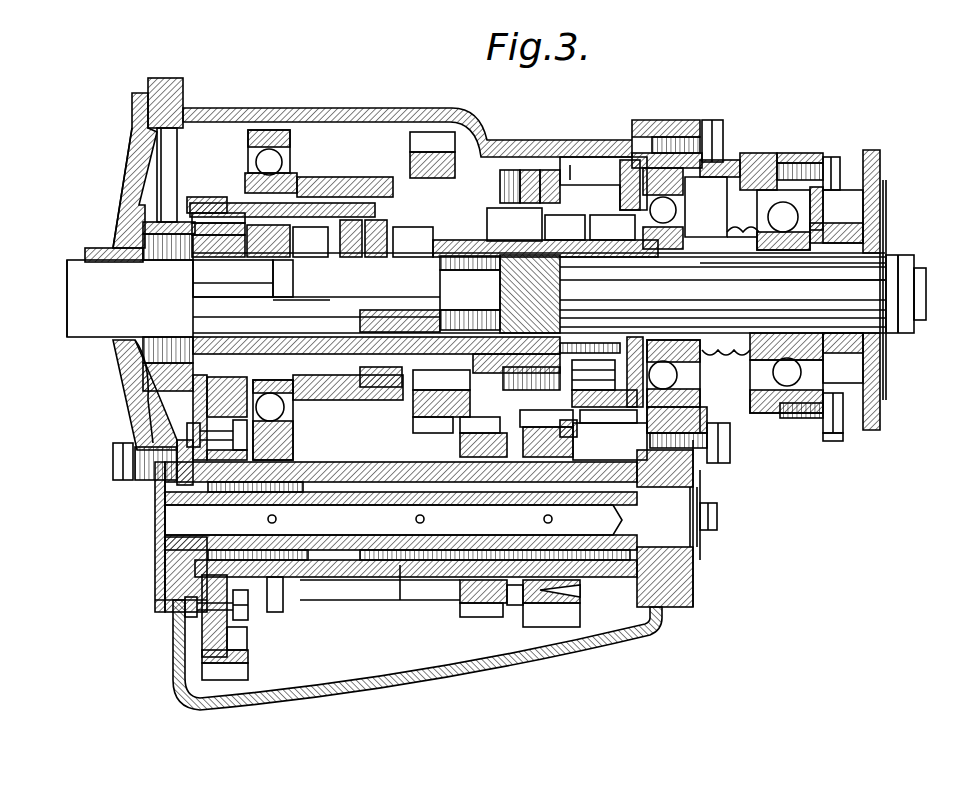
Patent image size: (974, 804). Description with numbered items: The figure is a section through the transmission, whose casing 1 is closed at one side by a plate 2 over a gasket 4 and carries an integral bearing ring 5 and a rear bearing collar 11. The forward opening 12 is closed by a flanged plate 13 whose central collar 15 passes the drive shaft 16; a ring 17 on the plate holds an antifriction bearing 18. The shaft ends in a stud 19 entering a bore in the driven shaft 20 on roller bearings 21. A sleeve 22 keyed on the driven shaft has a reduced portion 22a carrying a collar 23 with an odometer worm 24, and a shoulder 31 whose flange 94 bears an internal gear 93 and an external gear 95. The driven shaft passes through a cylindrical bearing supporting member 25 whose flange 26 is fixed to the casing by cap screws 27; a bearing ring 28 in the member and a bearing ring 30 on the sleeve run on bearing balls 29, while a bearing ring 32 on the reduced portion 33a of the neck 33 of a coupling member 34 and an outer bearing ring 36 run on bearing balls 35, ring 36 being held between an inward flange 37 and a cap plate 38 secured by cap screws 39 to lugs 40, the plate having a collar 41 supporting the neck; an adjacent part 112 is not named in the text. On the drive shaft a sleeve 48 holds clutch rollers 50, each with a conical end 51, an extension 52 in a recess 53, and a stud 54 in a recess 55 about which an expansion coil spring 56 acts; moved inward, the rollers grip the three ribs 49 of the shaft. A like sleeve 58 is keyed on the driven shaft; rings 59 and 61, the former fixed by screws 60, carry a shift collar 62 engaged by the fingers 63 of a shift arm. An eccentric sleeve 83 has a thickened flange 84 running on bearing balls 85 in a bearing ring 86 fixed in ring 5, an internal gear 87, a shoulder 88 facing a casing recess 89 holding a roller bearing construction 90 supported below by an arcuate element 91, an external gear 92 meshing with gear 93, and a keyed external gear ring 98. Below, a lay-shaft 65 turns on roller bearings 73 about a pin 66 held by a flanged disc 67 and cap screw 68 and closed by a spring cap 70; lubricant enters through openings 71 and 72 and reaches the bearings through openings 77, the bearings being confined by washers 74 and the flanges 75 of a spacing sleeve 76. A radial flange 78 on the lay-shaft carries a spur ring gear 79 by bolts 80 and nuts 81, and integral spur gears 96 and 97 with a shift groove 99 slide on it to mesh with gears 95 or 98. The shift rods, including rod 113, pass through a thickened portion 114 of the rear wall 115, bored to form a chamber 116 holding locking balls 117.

The casing 1 is at (372, 116).
The plate 2 is at (642, 637).
The gasket 4 is at (690, 587).
The bearing ring 5 is at (295, 415).
The bearing collar 11 is at (120, 450).
The opening 12 is at (165, 168).
The flanged plate 13 is at (132, 152).
The central collar 15 is at (110, 345).
The drive shaft 16 is at (78, 335).
The ring 17 is at (135, 395).
The antifriction bearing 18 is at (170, 337).
The stud 19 is at (440, 294).
The driven shaft 20 is at (886, 258).
The roller bearings 21 is at (488, 258).
The sleeve 22 is at (682, 258).
The reduced portion of sleeve 22a is at (742, 230).
The collar 23 is at (706, 352).
The worm 24 is at (738, 230).
The cylindrical bearing supporting member 25 is at (740, 415).
The outer peripheral flange 26 is at (690, 125).
The cap screws 27 is at (712, 120).
The bearing ring 28 is at (635, 408).
The bearing balls 29 is at (685, 210).
The bearing ring 30 is at (681, 232).
The shoulder 31 is at (676, 178).
The bearing ring 32 is at (680, 380).
The neck 33 is at (882, 240).
The inner reduced portion of neck 33a is at (812, 250).
The coupling member 34 is at (900, 340).
The bearing balls 35 is at (783, 200).
The outer bearing ring 36 is at (758, 155).
The inwardly projecting flange 37 is at (692, 392).
The cap plate 38 is at (828, 440).
The cap screws 39 is at (833, 155).
The lugs 40 is at (732, 445).
The outwardly extending collar 41 is at (836, 216).
The sleeve 48 is at (290, 380).
The ribs 49 is at (390, 262).
The clutch rollers 50 is at (305, 230).
The tapered end of clutch roller 51 is at (345, 218).
The extension 52 is at (376, 218).
The recess 53 is at (342, 255).
The stud 54 is at (310, 242).
The recess 55 is at (301, 290).
The expansion coil spring 56 is at (283, 257).
The sleeve 58 is at (455, 245).
The ring 59 is at (392, 235).
The screws 60 is at (286, 408).
The ring 61 is at (240, 200).
The shift collar 62 is at (400, 395).
The fingers 63 is at (372, 195).
The lay-shaft 65 is at (392, 583).
The pin 66 is at (700, 550).
The flanged disc 67 is at (702, 535).
The cap screw 68 is at (717, 515).
The spring cap 70 is at (155, 520).
The radial opening 71 is at (160, 505).
The opening 72 is at (155, 490).
The roller bearings 73 is at (320, 568).
The washers 74 is at (153, 568).
The flanges 75 is at (380, 580).
The spacing sleeve 76 is at (440, 590).
The openings 77 is at (278, 519).
The radial flange 78 is at (247, 632).
The spur ring gear 79 is at (248, 656).
The bolts 80 is at (250, 615).
The nuts 81 is at (153, 592).
The sleeve 83 is at (514, 224).
The thickened flange 84 is at (250, 180).
The bearing balls 85 is at (270, 160).
The bearing ring 86 is at (278, 108).
The internal gear 87 is at (245, 190).
The shoulder 88 is at (505, 165).
The recess 89 is at (523, 168).
The roller bearing construction 90 is at (548, 168).
The supporting element 91 is at (425, 410).
The external gear 92 is at (565, 227).
The internal gear 93 is at (598, 168).
The flange 94 is at (610, 227).
The external gear 95 is at (628, 165).
The spur gear 96 is at (528, 627).
The spur gear 97 is at (462, 600).
The external gear ring 98 is at (418, 158).
The central circumferential groove 99 is at (514, 605).
The shaft end 112 is at (915, 325).
The rod 113 is at (903, 335).
The thickened portion 114 is at (890, 320).
The wall 115 is at (196, 266).
The cylindrical chamber 116 is at (235, 270).
The locking balls 117 is at (240, 230).